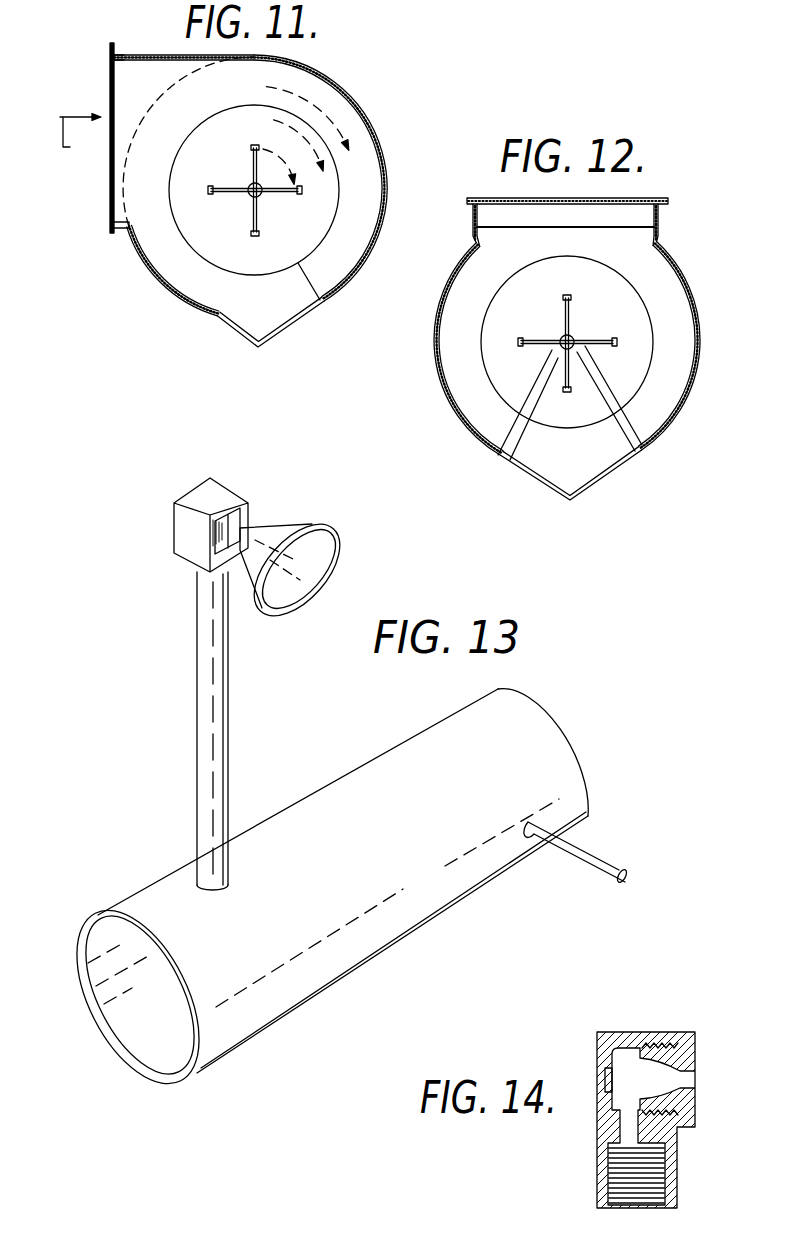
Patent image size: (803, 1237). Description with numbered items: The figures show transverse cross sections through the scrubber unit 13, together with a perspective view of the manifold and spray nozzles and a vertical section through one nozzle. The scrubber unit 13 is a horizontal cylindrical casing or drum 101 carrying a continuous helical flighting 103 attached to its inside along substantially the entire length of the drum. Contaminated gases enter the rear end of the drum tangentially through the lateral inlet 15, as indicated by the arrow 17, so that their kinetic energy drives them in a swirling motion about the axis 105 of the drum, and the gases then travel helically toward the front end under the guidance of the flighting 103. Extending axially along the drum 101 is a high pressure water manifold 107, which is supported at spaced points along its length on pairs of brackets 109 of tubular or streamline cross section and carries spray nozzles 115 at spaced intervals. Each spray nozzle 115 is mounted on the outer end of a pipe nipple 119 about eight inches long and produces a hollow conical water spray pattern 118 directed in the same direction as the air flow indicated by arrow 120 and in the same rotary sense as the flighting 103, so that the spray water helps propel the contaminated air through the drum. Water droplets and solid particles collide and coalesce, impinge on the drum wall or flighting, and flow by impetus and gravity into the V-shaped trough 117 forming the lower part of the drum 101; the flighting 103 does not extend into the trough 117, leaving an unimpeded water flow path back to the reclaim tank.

In FIG. 11, the scrubber unit 13 is at (372, 145).
In FIG. 12, the scrubber unit 13 is at (690, 307).
In FIG. 11, the lateral inlet 15 is at (109, 75).
In FIG. 11, the arrow 17 is at (80, 139).
In FIG. 11, the drum 101 is at (338, 87).
In FIG. 12, the drum 101 is at (655, 286).
In FIG. 11, the helical flighting 103 is at (352, 125).
In FIG. 12, the helical flighting 103 is at (660, 286).
In FIG. 11, the axis 105 is at (261, 198).
In FIG. 12, the axis 105 is at (573, 338).
In FIG. 11, the high pressure water manifold 107 is at (250, 185).
In FIG. 12, the high pressure water manifold 107 is at (561, 338).
In FIG. 12, the brackets 109 is at (530, 399).
In FIG. 11, the spray nozzle 115 is at (254, 145).
In FIG. 12, the spray nozzle 115 is at (566, 296).
In FIG. 13, the spray nozzle 115 is at (243, 528).
In FIG. 14, the spray nozzle 115 is at (684, 1113).
In FIG. 11, the trough 117 is at (250, 326).
In FIG. 12, the trough 117 is at (565, 483).
In FIG. 13, the water spray pattern 118 is at (233, 567).
In FIG. 13, the pipe nipple 119 is at (204, 651).
In FIG. 13, the arrow 120 is at (162, 495).